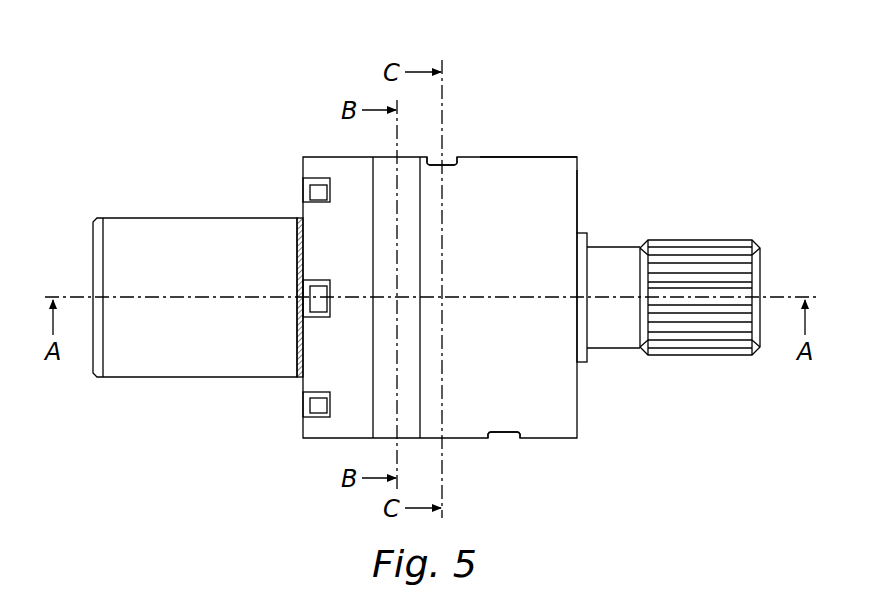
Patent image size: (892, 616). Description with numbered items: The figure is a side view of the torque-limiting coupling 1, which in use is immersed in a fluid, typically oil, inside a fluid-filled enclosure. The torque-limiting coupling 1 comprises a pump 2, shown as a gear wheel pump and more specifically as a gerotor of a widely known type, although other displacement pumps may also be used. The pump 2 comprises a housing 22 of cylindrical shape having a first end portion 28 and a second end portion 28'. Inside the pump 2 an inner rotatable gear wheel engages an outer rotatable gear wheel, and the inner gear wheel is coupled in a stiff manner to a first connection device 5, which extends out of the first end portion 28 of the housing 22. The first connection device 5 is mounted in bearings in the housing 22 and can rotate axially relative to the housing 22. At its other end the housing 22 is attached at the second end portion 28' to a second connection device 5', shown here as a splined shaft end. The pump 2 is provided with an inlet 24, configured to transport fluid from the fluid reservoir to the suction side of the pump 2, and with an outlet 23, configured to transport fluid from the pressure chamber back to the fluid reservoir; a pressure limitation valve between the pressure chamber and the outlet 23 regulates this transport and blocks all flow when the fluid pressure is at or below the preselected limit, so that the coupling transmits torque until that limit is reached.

The torque-limiting coupling 1 is at (157, 77).
The pump 2 is at (552, 135).
The first connection device 5 is at (195, 261).
The second connection device 5' is at (700, 256).
The housing 22 is at (532, 342).
The outlet 23 is at (500, 440).
The inlet 24 is at (444, 161).
The first end portion 28 is at (270, 277).
The second end portion 28' is at (627, 180).